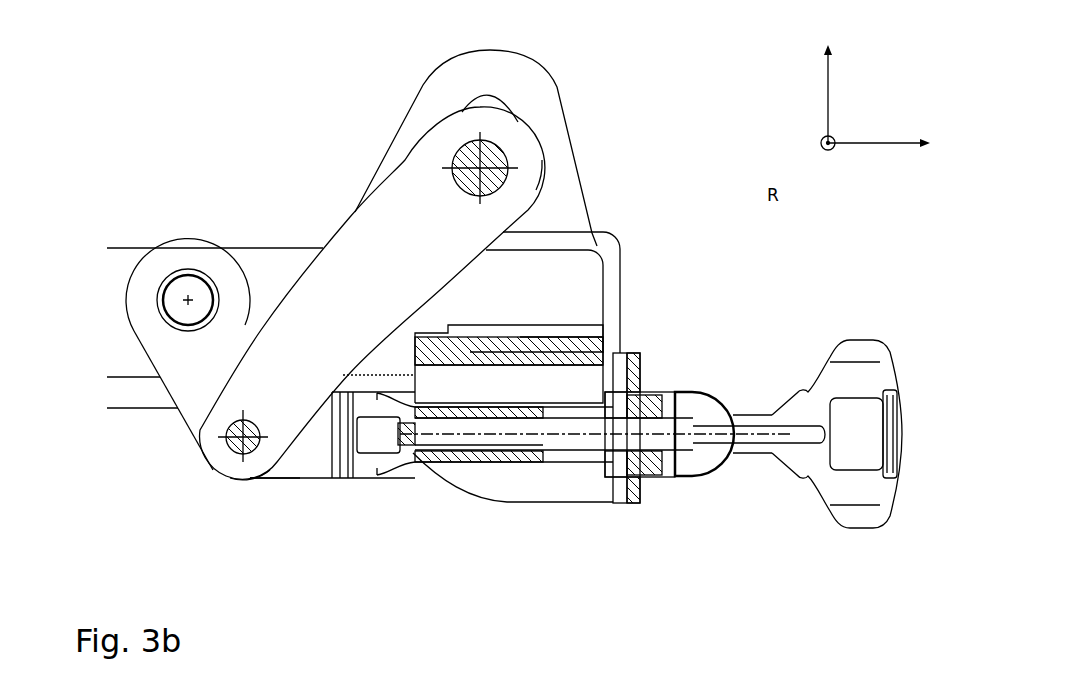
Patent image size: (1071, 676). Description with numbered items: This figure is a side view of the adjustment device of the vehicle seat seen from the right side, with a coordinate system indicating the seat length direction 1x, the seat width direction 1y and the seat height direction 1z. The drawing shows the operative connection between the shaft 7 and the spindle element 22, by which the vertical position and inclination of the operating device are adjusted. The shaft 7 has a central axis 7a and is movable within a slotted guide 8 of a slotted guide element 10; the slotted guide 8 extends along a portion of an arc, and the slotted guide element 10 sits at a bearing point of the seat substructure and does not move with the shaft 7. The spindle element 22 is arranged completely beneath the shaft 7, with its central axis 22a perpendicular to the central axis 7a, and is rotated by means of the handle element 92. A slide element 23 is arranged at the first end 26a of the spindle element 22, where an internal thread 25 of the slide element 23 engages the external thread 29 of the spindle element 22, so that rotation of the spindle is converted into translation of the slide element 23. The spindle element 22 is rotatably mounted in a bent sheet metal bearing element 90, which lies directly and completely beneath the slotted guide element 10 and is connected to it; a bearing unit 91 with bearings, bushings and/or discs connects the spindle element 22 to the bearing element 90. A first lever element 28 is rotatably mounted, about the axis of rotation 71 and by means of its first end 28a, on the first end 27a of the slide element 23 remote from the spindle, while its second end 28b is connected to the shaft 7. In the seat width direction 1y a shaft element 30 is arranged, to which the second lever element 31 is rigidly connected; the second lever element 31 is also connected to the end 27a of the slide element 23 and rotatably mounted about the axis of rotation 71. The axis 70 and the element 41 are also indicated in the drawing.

The shaft 7 is at (497, 150).
The central axis 7a is at (458, 160).
The slotted guide 8 is at (498, 89).
The slotted guide element 10 is at (537, 78).
The spindle element 22 is at (585, 443).
The central axis 22a is at (717, 437).
The slide element 23 is at (320, 458).
The internal thread 25 is at (557, 370).
The first end 26a is at (410, 447).
The first end 27a is at (222, 495).
The first lever element 28 is at (367, 232).
The first end 28a is at (240, 470).
The second end 28b is at (527, 187).
The external thread 29 is at (470, 443).
The shaft element 30 is at (202, 281).
The second lever element 31 is at (165, 352).
The guide 41 is at (272, 270).
The axis 70 is at (172, 283).
The axis of rotation 71 is at (229, 452).
The bearing element 90 is at (532, 488).
The bearing unit 91 is at (663, 382).
The handle element 92 is at (873, 378).
The seat length direction 1x is at (900, 145).
The seat width direction 1y is at (828, 150).
The seat height direction 1z is at (828, 100).